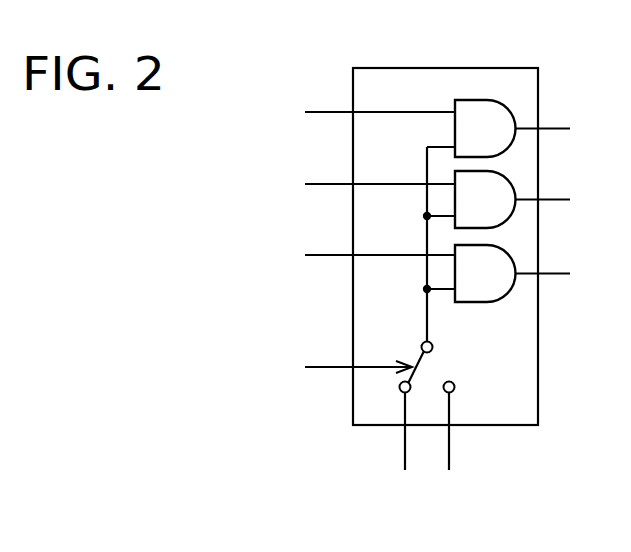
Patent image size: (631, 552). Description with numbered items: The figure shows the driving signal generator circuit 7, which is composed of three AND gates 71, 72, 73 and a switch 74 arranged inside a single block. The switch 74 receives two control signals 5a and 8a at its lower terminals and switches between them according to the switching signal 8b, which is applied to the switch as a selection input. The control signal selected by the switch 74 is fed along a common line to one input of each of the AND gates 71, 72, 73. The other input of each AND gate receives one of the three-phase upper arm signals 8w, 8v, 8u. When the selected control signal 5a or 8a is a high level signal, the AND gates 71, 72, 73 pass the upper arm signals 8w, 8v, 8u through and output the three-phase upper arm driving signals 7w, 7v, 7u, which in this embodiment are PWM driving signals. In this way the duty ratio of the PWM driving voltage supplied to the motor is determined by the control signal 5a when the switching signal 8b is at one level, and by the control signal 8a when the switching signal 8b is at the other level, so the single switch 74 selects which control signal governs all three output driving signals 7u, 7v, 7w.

The driving signal generator circuit 7 is at (441, 83).
The AND gate 71 is at (498, 120).
The AND gate 72 is at (498, 195).
The AND gate 73 is at (498, 265).
The upper arm driving signal 7w is at (561, 128).
The upper arm driving signal 7v is at (561, 199).
The upper arm driving signal 7u is at (561, 273).
The upper arm signal 8w is at (356, 112).
The upper arm signal 8v is at (356, 184).
The upper arm signal 8u is at (356, 255).
The switching signal 8b is at (335, 368).
The switch 74 is at (431, 380).
The control signal 8a is at (388, 448).
The control signal 5a is at (466, 448).